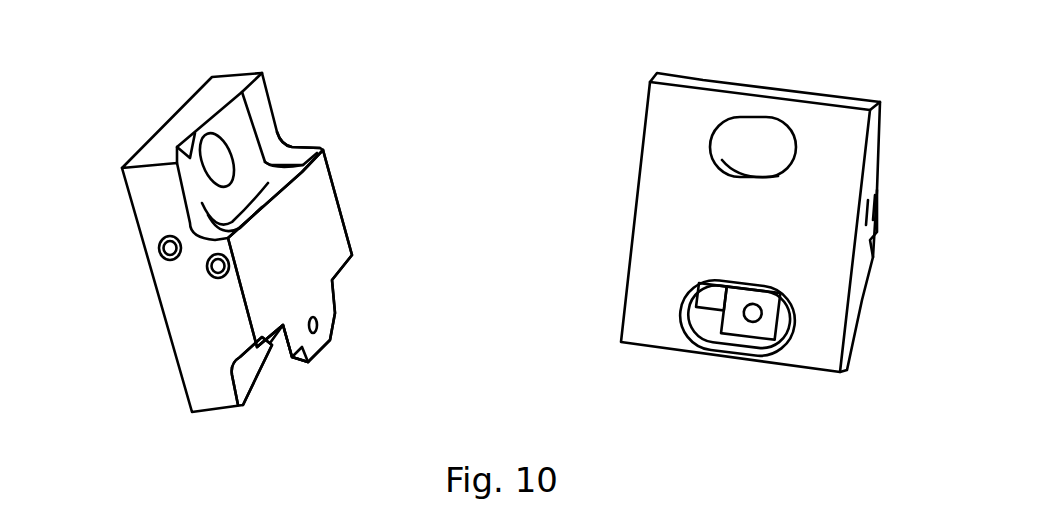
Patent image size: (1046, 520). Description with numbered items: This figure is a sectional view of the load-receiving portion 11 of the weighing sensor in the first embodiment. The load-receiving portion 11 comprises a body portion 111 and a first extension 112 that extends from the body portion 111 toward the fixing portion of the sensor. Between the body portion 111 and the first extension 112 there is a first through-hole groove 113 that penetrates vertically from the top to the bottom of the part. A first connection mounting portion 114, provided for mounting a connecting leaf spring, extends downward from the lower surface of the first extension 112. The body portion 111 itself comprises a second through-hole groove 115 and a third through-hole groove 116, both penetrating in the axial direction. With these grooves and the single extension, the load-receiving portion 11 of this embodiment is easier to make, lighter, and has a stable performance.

The load-receiving portion 11 is at (132, 90).
The body portion 111 is at (213, 97).
The first extension 112 is at (300, 232).
The first through-hole groove 113 is at (270, 170).
The first connection mounting portion 114 is at (302, 338).
The second through-hole groove 115 is at (743, 148).
The third through-hole groove 116 is at (690, 340).